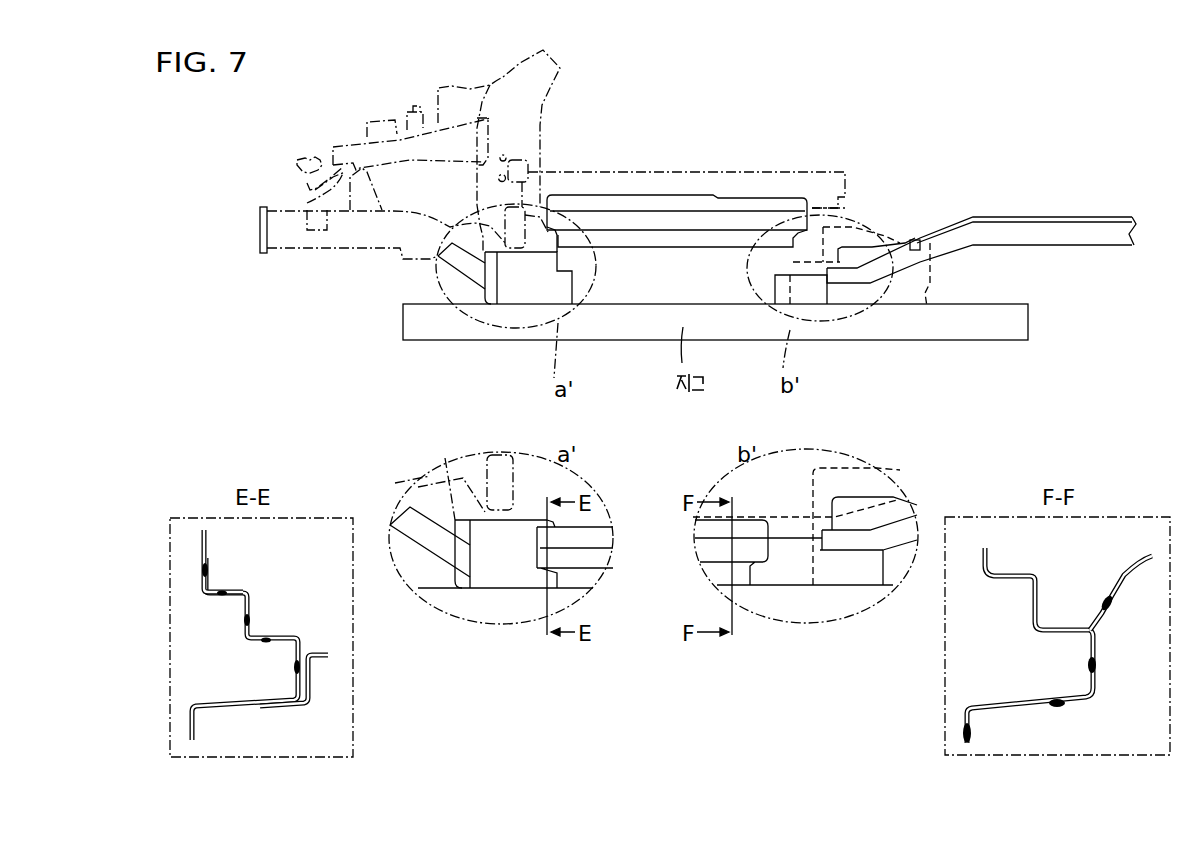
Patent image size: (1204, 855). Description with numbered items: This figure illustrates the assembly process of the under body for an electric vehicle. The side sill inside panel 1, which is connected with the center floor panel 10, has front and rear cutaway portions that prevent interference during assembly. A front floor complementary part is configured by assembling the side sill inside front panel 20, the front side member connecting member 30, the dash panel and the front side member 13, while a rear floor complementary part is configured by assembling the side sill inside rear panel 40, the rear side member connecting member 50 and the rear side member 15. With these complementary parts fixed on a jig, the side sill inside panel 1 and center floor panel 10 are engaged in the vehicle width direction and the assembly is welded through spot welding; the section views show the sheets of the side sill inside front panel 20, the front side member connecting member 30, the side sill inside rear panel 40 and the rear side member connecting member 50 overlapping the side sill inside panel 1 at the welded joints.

The side sill inside panel 1 is at (662, 197).
The center floor panel 10 is at (774, 172).
The front side member 13 is at (288, 252).
The rear side member 15 is at (1047, 230).
The side sill inside front panel 20 is at (530, 293).
The front side member connecting member 30 is at (467, 297).
The side sill inside rear panel 40 is at (908, 295).
The rear side member connecting member 50 is at (832, 297).